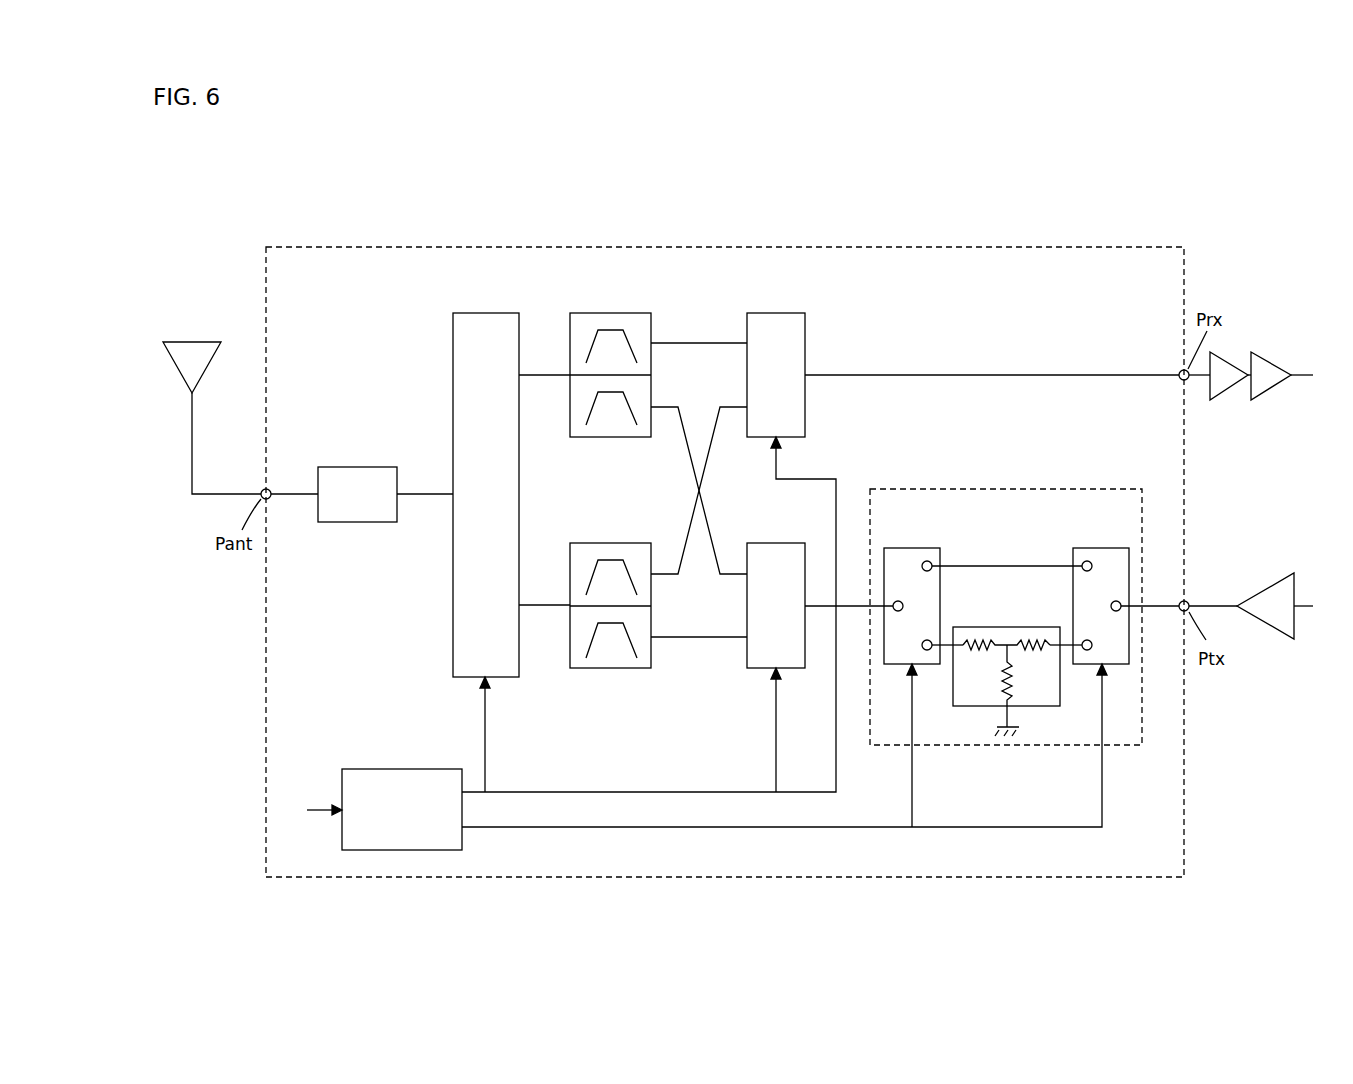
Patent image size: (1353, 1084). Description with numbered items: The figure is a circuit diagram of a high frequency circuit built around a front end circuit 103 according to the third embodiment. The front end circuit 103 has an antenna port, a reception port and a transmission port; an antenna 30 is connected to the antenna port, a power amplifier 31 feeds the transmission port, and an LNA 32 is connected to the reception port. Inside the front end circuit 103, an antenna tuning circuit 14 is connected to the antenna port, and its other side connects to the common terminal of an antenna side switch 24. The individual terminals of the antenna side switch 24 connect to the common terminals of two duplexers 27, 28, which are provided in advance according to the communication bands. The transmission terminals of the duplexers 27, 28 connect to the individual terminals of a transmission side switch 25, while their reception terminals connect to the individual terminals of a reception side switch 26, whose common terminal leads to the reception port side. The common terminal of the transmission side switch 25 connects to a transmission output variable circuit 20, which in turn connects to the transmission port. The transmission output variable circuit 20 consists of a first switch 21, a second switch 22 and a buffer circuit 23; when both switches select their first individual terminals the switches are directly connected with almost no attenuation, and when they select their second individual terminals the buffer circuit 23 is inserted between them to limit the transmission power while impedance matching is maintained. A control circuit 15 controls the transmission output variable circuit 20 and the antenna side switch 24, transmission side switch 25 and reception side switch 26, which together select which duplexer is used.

The front end circuit 103 is at (915, 246).
The antenna 30 is at (190, 340).
The antenna tuning circuit 14 is at (360, 466).
The antenna side switch 24 is at (485, 312).
The duplexer 28 is at (612, 312).
The duplexer 27 is at (612, 542).
The reception side switch 26 is at (778, 312).
The transmission side switch 25 is at (778, 542).
The transmission output variable circuit 20 is at (1006, 488).
The second high frequency switch 22 is at (912, 547).
The first high frequency switch 21 is at (1100, 547).
The buffer circuit 23 is at (1006, 626).
The control circuit 15 is at (398, 768).
The LNA 32 is at (1258, 336).
The power amplifier 31 is at (1263, 590).